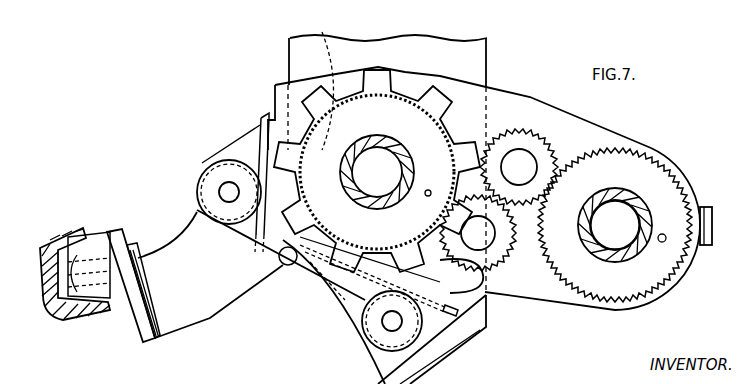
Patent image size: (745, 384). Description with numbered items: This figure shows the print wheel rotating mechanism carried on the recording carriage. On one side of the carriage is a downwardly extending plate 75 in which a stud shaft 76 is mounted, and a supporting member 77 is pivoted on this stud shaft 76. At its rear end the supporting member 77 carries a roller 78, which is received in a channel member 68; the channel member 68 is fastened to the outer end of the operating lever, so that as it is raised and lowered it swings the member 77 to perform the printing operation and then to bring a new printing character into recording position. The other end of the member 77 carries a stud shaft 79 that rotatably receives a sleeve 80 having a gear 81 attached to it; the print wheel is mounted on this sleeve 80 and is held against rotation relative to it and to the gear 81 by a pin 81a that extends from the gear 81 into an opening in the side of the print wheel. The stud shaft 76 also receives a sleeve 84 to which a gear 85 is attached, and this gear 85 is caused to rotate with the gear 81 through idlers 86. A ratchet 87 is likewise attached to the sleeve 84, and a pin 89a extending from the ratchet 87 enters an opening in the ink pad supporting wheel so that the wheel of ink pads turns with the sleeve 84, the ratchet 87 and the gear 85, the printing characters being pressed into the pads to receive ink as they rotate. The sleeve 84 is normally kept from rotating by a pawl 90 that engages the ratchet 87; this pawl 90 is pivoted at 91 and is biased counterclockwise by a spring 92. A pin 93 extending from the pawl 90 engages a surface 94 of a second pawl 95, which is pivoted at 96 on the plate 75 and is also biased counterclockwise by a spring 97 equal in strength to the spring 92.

The channel member 68 is at (43, 243).
The downwardly extending plate 75 is at (474, 67).
The stud shaft 76 is at (390, 152).
The supporting member 77 is at (548, 113).
The roller 78 is at (95, 240).
The stud shaft 79 is at (628, 213).
The sleeve 80 is at (598, 198).
The gear 81 is at (626, 150).
The pin 81a is at (665, 241).
The sleeve 84 is at (368, 152).
The gear 85 is at (322, 83).
The idlers 86 is at (552, 164).
The ratchet 87 is at (303, 97).
The pin 89a is at (428, 190).
The pawl 90 is at (242, 243).
The pivot 91 is at (229, 190).
The spring 92 is at (257, 147).
The pin 93 is at (288, 265).
The surface 94 is at (327, 277).
The second pawl 95 is at (437, 320).
The pivot 96 is at (388, 322).
The spring 97 is at (342, 305).